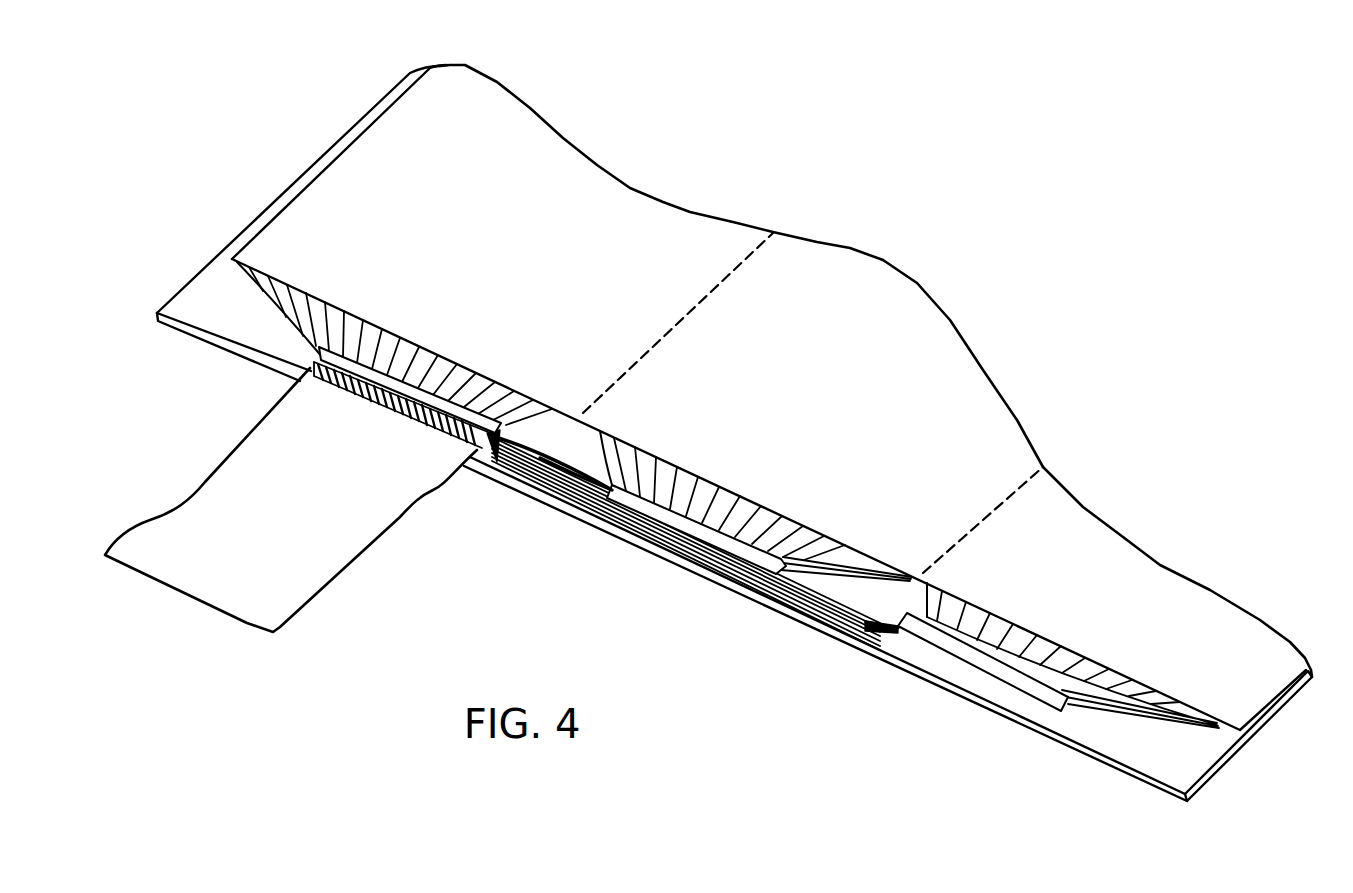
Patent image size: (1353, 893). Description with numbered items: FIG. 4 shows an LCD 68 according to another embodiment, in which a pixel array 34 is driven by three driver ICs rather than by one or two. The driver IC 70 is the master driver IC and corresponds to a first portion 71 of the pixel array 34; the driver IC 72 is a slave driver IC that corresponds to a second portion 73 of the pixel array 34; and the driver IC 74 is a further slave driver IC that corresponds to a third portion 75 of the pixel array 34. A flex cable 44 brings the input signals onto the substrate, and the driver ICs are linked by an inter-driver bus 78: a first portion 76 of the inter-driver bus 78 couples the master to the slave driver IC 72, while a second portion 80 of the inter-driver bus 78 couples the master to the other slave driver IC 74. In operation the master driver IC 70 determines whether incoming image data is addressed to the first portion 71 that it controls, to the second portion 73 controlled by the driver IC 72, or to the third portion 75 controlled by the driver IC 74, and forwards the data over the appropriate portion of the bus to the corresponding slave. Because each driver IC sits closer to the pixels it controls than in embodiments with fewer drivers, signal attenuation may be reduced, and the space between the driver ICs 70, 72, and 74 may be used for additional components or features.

The LCD 68 is at (205, 143).
The pixel array 34 is at (390, 133).
The first portion of pixel array 71 is at (613, 193).
The second portion of pixel array 73 is at (900, 298).
The third portion of pixel array 75 is at (1143, 577).
The flex cable 44 is at (347, 548).
The driver IC 70 is at (400, 383).
The driver IC 72 is at (713, 530).
The first portion of inter-driver bus 76 is at (600, 477).
The driver IC 74 is at (957, 647).
The inter-driver bus 78 is at (553, 448).
The second portion of inter-driver bus 80 is at (858, 607).